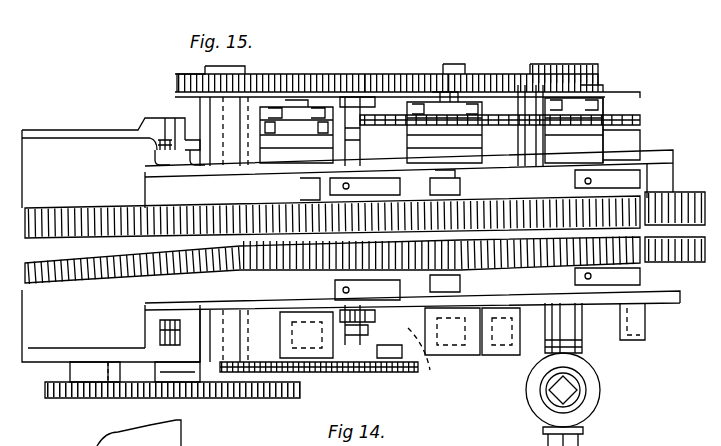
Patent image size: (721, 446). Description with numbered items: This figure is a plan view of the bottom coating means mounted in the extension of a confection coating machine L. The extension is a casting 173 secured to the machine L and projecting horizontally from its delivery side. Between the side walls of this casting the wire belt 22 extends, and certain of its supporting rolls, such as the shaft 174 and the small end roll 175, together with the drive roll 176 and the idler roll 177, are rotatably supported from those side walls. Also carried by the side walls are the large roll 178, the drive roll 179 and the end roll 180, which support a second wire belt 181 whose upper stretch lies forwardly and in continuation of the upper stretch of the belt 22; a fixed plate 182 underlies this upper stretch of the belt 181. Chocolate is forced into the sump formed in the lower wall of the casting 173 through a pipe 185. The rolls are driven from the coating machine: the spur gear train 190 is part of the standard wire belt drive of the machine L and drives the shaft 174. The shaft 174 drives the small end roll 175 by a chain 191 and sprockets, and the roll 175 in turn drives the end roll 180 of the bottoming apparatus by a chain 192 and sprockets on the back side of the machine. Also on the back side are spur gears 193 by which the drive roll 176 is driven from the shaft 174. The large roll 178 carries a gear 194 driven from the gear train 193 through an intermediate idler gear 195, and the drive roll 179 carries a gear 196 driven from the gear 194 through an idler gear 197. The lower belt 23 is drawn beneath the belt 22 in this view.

The coating machine L is at (65, 130).
The wire belt 22 is at (90, 234).
The lower rack bar 23 is at (695, 262).
The casting 173 is at (172, 120).
The shaft 174 is at (232, 191).
The small end roll 175 is at (418, 358).
The drive roll 176 is at (333, 341).
The idler roll 177 is at (302, 191).
The large roll 178 is at (496, 303).
The drive roll 179 is at (590, 89).
The end roll 180 is at (652, 350).
The second wire belt 181 is at (503, 196).
The fixed plate 182 is at (552, 197).
The pipe 185 is at (588, 352).
The spur gear train 190 is at (170, 398).
The chain 191 is at (352, 373).
The chain 192 is at (504, 125).
The spur gears 193 is at (252, 73).
The gear 194 is at (451, 74).
The intermediate idler gear 195 is at (372, 74).
The gear 196 is at (586, 66).
The idler gear 197 is at (518, 70).